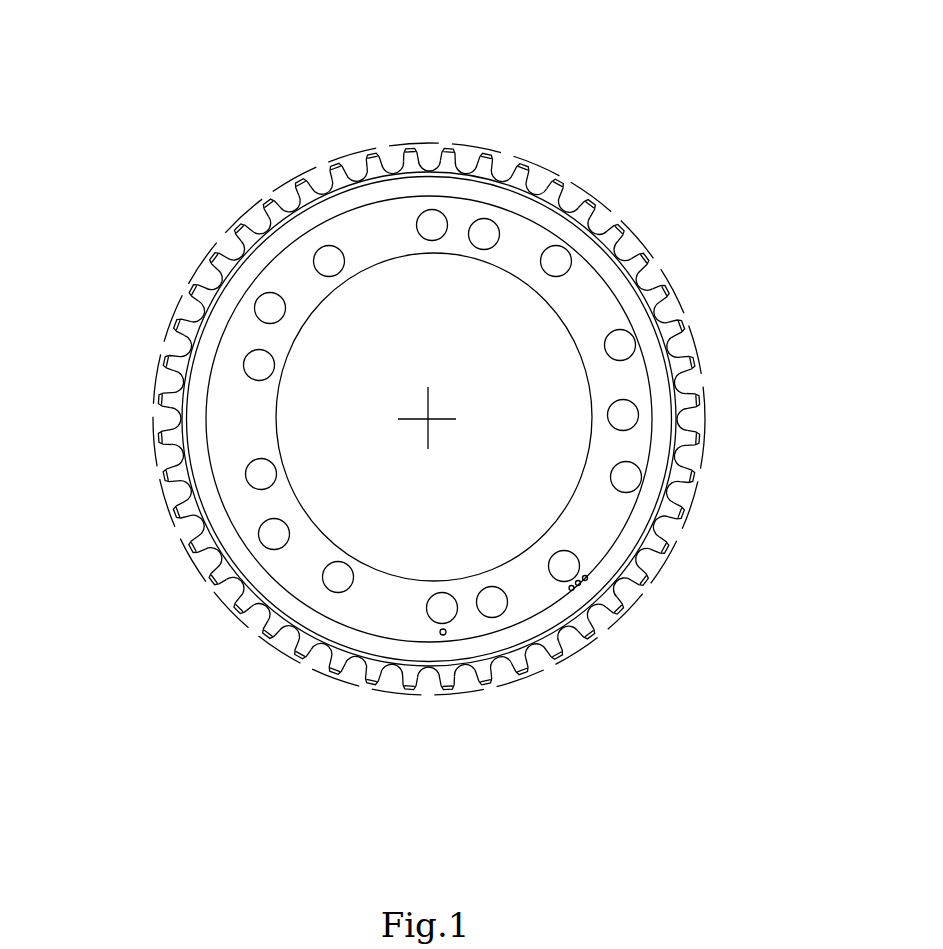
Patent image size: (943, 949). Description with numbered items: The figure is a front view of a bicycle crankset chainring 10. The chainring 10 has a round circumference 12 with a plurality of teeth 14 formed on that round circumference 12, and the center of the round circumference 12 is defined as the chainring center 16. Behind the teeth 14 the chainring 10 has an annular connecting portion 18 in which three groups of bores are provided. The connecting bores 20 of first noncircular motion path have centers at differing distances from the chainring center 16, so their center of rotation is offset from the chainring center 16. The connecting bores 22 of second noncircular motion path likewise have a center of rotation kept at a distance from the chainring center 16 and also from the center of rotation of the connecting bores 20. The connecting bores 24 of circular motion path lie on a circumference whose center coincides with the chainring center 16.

The chainring 10 is at (522, 134).
The round circumference 12 is at (594, 253).
The teeth 14 is at (412, 147).
The chainring center 16 is at (428, 419).
The annular connecting portion 18 is at (222, 423).
The connecting bores of first noncircular motion path 20 is at (329, 258).
The connecting bores of second noncircular motion path 22 is at (432, 225).
The connecting bores of circular motion path 24 is at (485, 233).